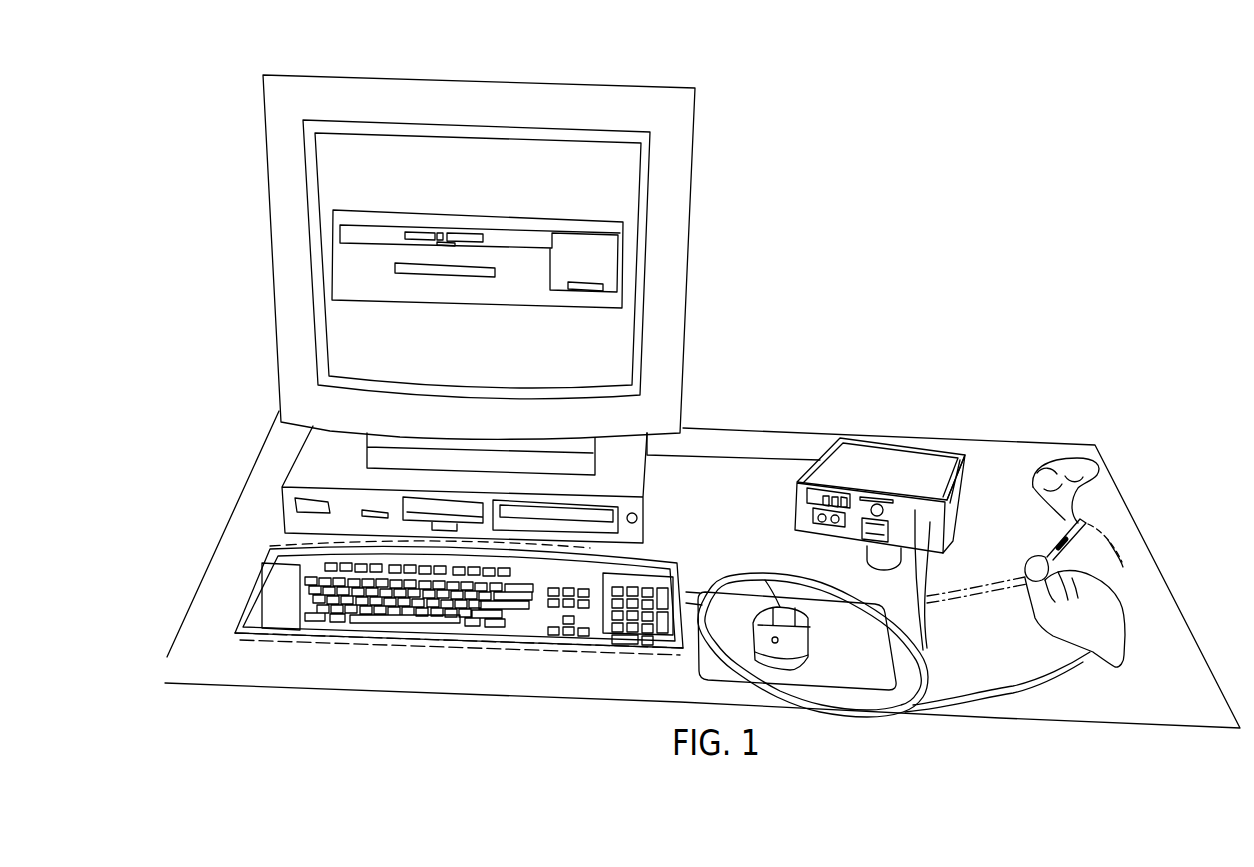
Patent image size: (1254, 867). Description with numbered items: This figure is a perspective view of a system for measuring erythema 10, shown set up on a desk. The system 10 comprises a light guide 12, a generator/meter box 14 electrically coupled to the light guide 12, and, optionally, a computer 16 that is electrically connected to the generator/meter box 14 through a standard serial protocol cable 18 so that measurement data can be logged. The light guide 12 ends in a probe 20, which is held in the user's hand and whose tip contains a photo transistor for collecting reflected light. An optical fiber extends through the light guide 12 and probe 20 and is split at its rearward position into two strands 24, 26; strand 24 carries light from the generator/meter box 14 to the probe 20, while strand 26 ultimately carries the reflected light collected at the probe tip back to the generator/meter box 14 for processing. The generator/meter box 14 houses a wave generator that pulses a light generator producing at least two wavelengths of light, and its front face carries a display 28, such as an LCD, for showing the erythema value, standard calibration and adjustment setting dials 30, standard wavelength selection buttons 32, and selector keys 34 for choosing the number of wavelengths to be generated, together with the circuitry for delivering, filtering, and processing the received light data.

The system for measuring erythema 10 is at (931, 692).
The light guide 12 is at (1014, 685).
The generator/meter box 14 is at (849, 508).
The computer 16 is at (683, 406).
The RS 232 protocol cable 18 is at (742, 456).
The probe 20 is at (1073, 523).
The optical fiber strand 24 is at (949, 534).
The optical fiber strand 26 is at (913, 511).
The display 28 is at (806, 493).
The calibration and adjustment setting dials 30 is at (825, 530).
The wavelength selection buttons 32 is at (865, 532).
The selector keys 34 is at (871, 562).